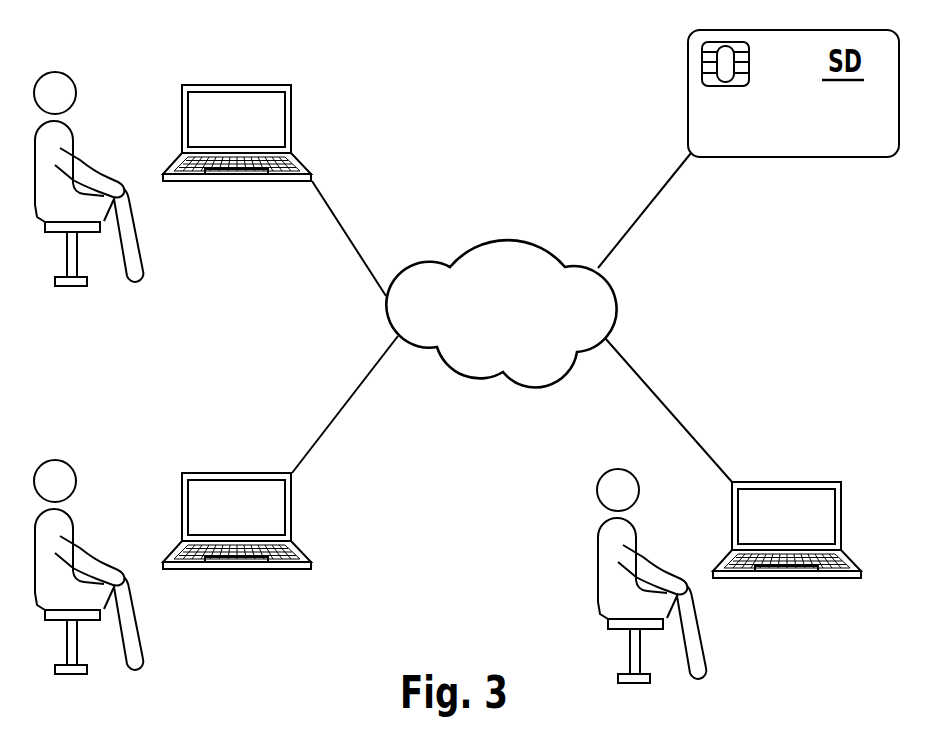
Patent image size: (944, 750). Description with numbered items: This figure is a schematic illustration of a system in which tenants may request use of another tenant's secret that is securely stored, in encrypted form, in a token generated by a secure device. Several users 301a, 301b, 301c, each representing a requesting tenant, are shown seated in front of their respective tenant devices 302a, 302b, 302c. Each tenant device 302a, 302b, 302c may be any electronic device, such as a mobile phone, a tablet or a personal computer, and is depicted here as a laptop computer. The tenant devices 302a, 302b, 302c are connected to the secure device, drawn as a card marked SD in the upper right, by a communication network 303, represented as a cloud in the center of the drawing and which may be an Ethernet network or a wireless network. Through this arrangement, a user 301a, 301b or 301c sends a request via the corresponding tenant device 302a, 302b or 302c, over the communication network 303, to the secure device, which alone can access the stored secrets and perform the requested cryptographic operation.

The user 301a is at (53, 95).
The user 301b is at (53, 483).
The user 301c is at (616, 492).
The tenant device 302a is at (218, 182).
The tenant device 302b is at (218, 570).
The tenant device 302c is at (767, 582).
The communication network 303 is at (509, 250).